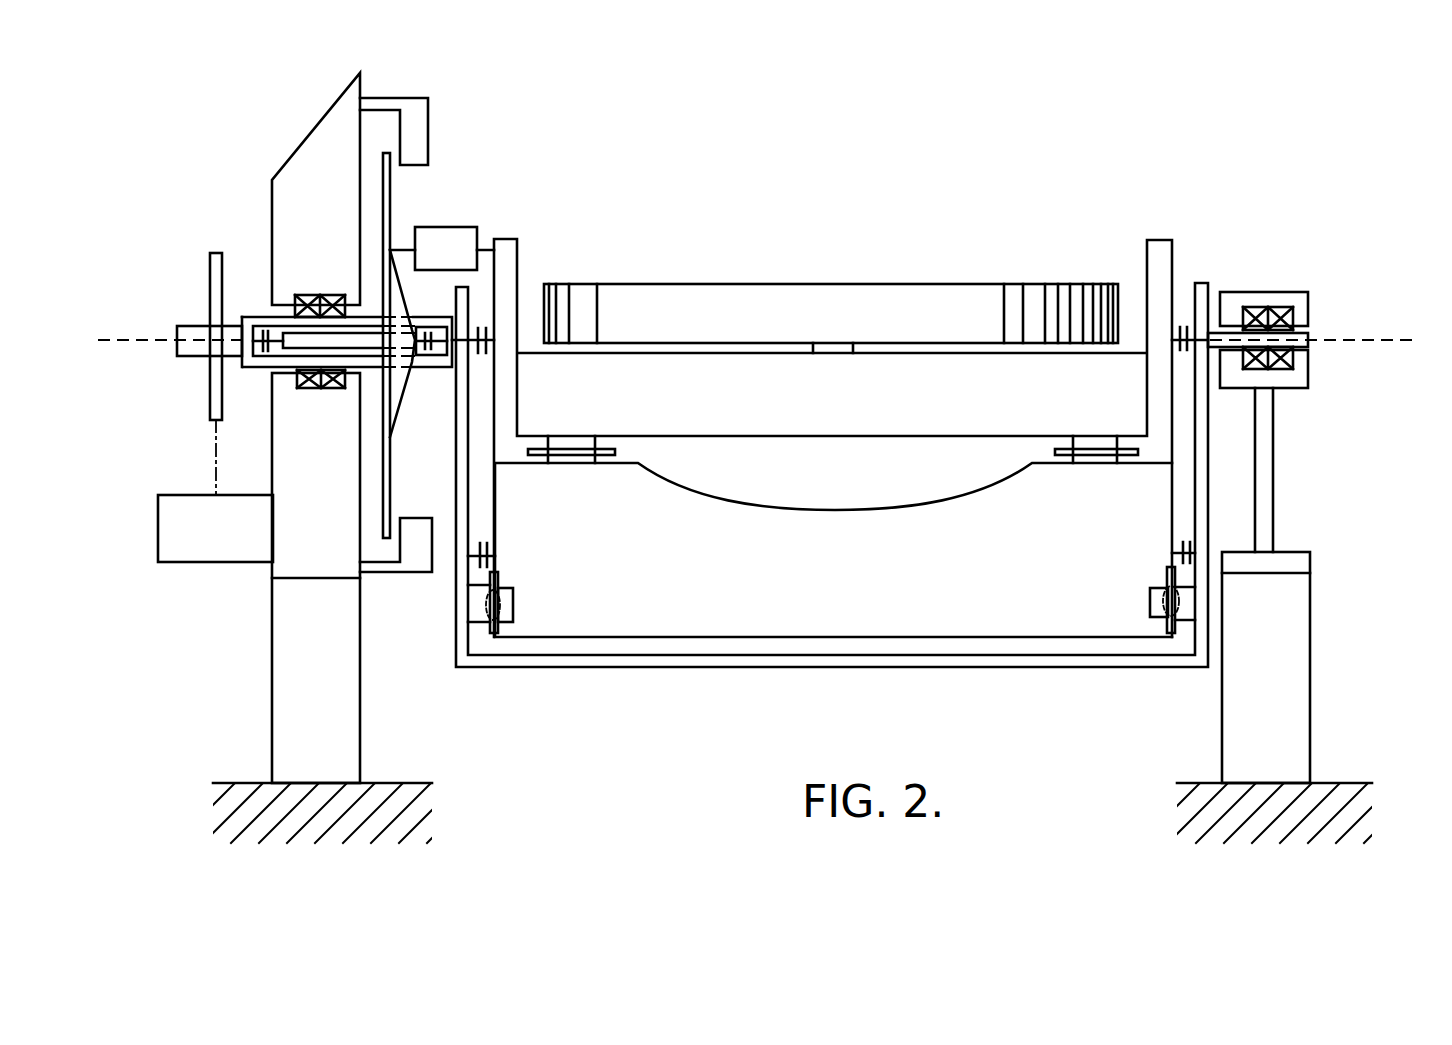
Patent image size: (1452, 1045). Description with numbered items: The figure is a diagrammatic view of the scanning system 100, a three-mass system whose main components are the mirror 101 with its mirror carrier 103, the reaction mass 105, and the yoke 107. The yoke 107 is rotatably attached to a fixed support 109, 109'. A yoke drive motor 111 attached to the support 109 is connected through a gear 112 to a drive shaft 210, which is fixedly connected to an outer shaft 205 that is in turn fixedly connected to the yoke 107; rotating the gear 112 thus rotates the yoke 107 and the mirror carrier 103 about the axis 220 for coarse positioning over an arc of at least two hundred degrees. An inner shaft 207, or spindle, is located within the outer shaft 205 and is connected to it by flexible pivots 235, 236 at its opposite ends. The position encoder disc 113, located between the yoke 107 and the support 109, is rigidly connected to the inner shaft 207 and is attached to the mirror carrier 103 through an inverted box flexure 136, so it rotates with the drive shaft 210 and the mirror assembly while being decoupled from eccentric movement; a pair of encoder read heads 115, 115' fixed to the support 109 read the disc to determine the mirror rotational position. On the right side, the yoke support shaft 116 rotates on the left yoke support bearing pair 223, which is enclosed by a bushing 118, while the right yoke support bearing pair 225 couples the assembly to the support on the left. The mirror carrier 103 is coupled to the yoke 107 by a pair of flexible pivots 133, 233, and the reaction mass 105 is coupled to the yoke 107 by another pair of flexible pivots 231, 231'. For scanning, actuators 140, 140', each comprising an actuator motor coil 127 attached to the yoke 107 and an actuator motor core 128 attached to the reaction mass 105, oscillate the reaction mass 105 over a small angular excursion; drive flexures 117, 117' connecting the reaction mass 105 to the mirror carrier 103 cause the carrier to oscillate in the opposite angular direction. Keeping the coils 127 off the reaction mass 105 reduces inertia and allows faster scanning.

The scanning system 100 is at (944, 141).
The mirror 101 is at (831, 318).
The mirror carrier 103 is at (833, 438).
The reaction mass 105 is at (833, 550).
The yoke 107 is at (884, 690).
The fixed support 109 is at (355, 428).
The fixed support 109' is at (1309, 585).
The yoke drive motor 111 is at (188, 562).
The gear 112 is at (208, 400).
The position encoder disc 113 is at (390, 210).
The encoder read head 115 is at (433, 131).
The encoder read head 115' is at (397, 574).
The right yoke support shaft 116 is at (1213, 330).
The drive flexure 117 is at (569, 472).
The drive flexure 117' is at (1096, 472).
The bushing 118 is at (1253, 292).
The actuator motor coil 127 is at (512, 602).
The actuator motor core 128 is at (500, 575).
The flexible pivot 133 is at (1183, 350).
The inverted box flexure 136 is at (437, 247).
The actuator 140 is at (832, 596).
The actuator 140' is at (1051, 598).
The outer shaft 205 is at (263, 317).
The inner shaft (spindle) 207 is at (368, 337).
The drive shaft 210 is at (187, 326).
The axis 220 is at (148, 340).
The left yoke support bearing pair 223 is at (1297, 320).
The right yoke support bearing pair 225 is at (333, 295).
The flexible pivot 231 is at (533, 543).
The flexible pivot 231' is at (1271, 534).
The flexible pivot 233 is at (487, 332).
The flexible pivot 235 is at (257, 356).
The flexible pivot 236 is at (433, 357).